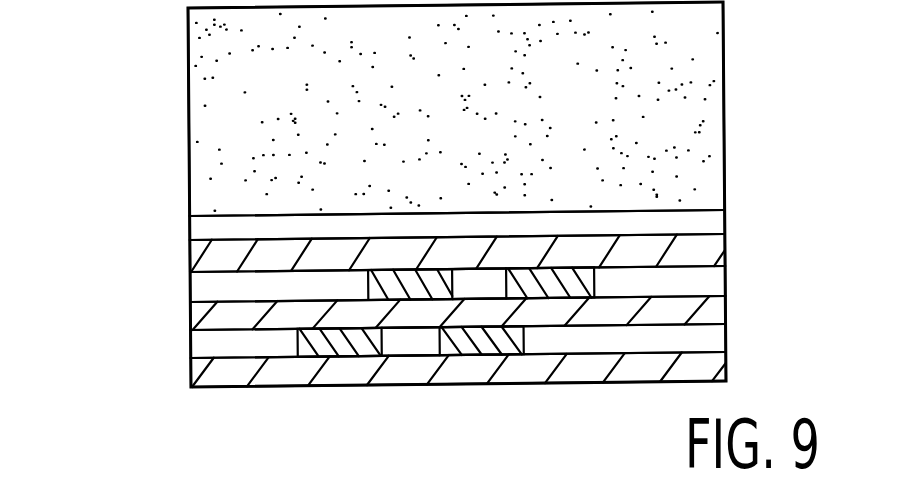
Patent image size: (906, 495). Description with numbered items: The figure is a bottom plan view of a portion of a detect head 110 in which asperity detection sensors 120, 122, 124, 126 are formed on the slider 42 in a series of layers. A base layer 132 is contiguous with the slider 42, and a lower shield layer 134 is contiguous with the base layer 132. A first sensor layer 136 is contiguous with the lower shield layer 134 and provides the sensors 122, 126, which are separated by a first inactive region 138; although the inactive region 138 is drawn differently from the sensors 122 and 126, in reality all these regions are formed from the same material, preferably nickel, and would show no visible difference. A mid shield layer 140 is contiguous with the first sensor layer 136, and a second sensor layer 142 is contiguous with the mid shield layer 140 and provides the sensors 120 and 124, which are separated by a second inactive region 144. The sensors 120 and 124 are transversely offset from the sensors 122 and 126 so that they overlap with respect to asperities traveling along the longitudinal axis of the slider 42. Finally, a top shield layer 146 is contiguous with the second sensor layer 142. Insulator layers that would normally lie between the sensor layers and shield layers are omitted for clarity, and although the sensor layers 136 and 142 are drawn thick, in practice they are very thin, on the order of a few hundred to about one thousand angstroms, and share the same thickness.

The slider 42 is at (727, 48).
The detect head 110 is at (148, 186).
The asperity detection sensor 120 is at (297, 342).
The asperity detection sensor 122 is at (432, 283).
The asperity detection sensor 124 is at (527, 345).
The asperity detection sensor 126 is at (565, 300).
The base layer 132 is at (727, 220).
The lower shield layer 134 is at (727, 240).
The first sensor layer 136 is at (727, 284).
The first inactive region 138 is at (493, 286).
The mid shield layer 140 is at (727, 308).
The second sensor layer 142 is at (727, 337).
The second inactive region 144 is at (407, 345).
The top shield layer 146 is at (727, 364).